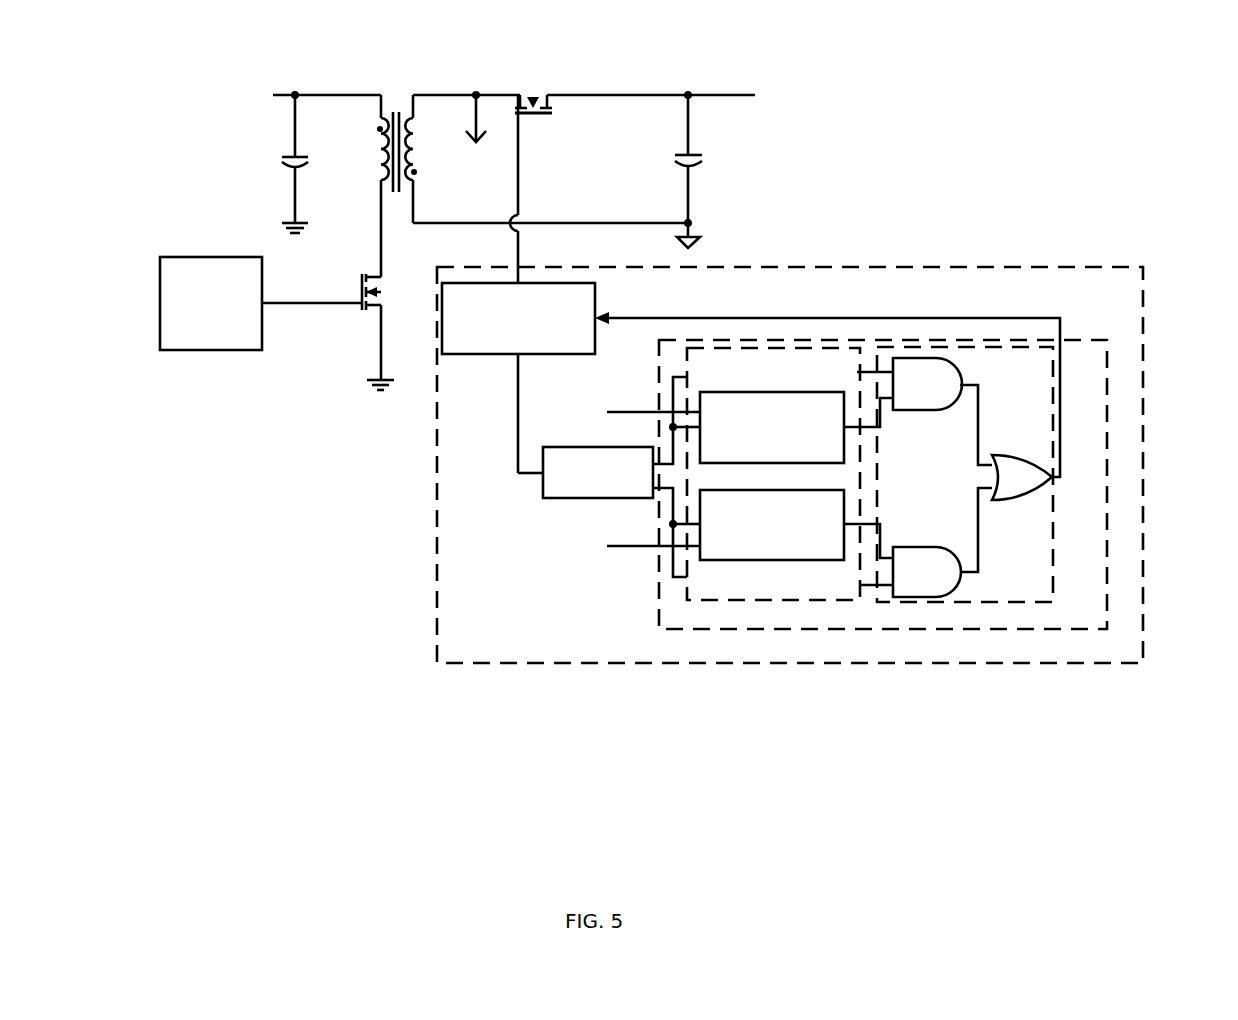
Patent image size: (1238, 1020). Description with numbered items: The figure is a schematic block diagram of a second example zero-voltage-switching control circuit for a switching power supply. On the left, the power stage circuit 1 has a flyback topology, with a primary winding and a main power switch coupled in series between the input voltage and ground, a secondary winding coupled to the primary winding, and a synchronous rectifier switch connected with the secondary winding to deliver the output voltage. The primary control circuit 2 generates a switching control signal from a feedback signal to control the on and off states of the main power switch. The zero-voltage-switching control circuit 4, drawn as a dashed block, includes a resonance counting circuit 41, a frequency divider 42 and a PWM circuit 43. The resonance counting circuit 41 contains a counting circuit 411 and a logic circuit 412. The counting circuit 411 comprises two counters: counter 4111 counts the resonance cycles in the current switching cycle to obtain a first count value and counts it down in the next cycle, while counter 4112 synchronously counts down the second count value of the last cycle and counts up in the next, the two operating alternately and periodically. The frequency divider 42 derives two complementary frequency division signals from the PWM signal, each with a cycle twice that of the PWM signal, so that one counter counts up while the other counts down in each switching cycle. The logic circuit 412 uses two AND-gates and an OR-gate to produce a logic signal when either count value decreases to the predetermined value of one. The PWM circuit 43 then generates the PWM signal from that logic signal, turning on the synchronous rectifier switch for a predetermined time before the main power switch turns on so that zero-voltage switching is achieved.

The power stage circuit 1 is at (739, 41).
The primary control circuit 2 is at (230, 350).
The zero-voltage-switching control circuit 4 is at (520, 663).
The resonance counting circuit 41 is at (910, 629).
The counting circuit 411 is at (782, 600).
The counter 4111 is at (747, 453).
The counter 4112 is at (747, 552).
The logic circuit 412 is at (1053, 548).
The frequency divider 42 is at (573, 498).
The PWM circuit 43 is at (530, 345).